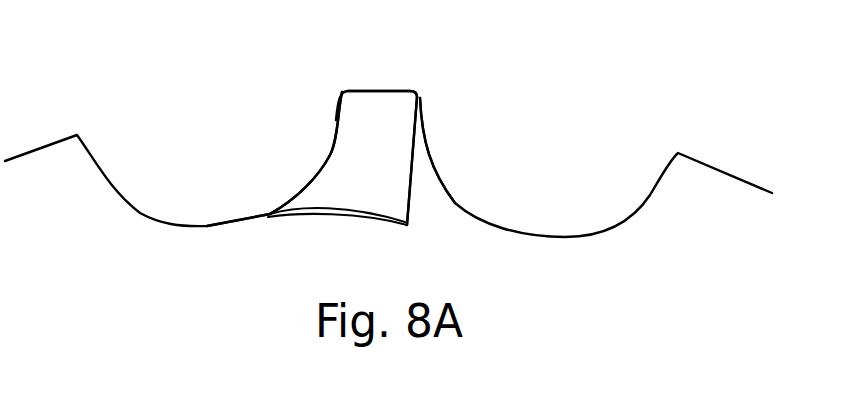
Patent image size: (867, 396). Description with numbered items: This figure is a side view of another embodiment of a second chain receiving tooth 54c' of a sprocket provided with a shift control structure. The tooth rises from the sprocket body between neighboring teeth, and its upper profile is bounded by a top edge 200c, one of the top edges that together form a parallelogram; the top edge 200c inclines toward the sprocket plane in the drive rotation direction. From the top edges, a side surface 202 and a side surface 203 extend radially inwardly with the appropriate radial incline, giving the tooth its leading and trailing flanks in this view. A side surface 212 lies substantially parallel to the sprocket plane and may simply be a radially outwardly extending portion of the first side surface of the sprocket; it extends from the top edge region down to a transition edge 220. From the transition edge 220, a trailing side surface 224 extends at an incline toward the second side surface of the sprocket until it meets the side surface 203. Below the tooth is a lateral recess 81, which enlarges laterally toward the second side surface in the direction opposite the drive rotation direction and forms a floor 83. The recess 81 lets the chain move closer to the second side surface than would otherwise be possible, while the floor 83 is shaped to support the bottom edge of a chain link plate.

The second chain receiving tooth 54c' is at (388, 122).
The top edge 200c is at (380, 91).
The side surface 203 is at (335, 127).
The side surface 202 is at (420, 112).
The side surface 212 is at (422, 174).
The trailing side surface 224 is at (340, 180).
The lateral recess 81 is at (278, 215).
The floor 83 is at (308, 216).
The transition edge 220 is at (410, 207).